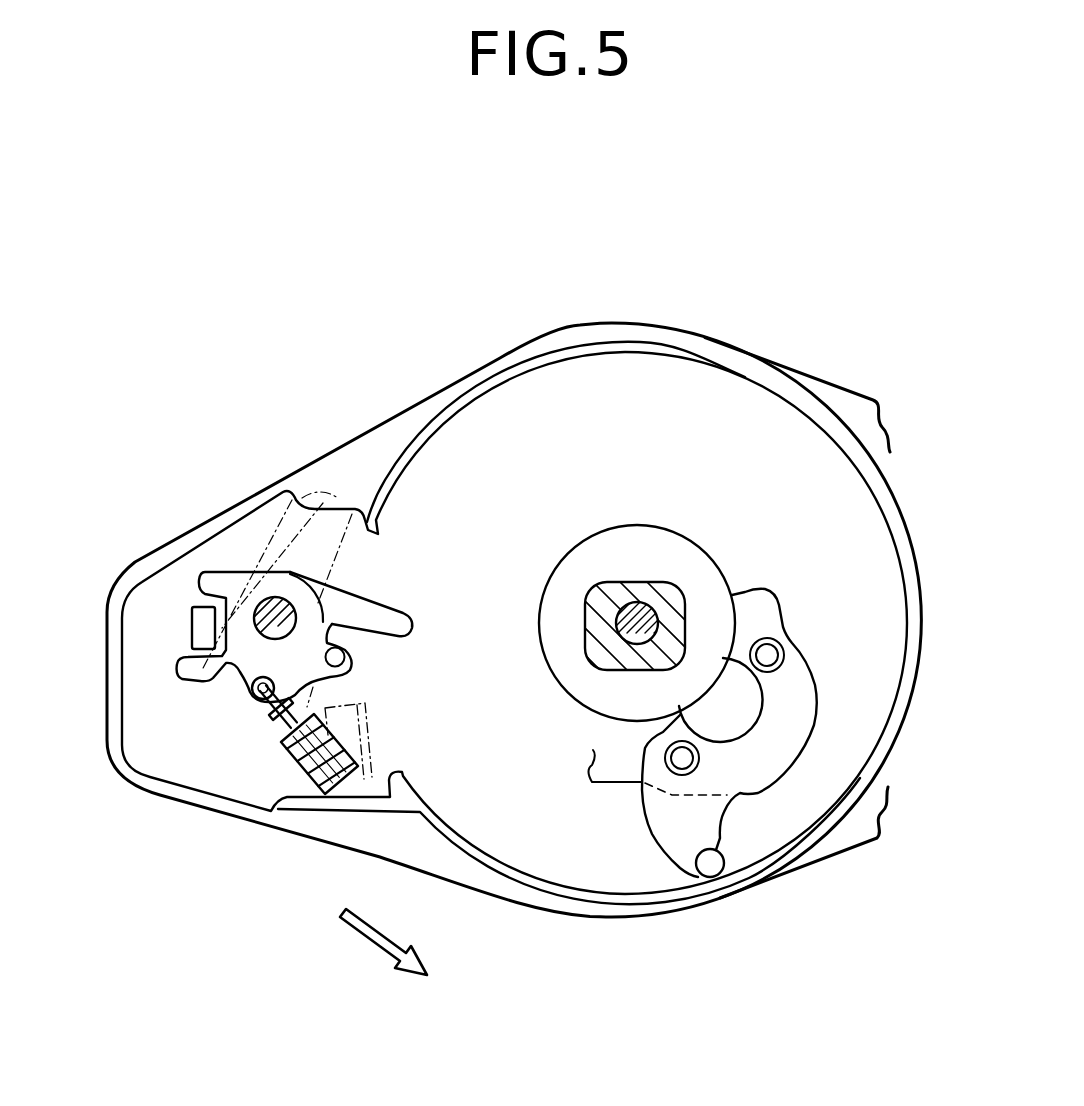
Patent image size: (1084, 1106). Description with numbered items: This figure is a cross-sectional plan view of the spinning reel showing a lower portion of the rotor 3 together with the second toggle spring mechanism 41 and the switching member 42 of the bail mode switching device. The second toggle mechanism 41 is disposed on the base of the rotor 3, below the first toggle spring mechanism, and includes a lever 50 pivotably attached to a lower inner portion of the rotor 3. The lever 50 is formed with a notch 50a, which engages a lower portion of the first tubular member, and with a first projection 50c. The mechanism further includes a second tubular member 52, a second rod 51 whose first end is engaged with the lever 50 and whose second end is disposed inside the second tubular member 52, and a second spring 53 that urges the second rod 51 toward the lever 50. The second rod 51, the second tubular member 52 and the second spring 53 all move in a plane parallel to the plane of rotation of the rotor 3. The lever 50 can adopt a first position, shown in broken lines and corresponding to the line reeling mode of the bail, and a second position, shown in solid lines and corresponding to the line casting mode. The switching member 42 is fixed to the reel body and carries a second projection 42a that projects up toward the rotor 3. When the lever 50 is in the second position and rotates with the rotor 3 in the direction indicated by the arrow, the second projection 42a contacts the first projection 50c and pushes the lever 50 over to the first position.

The rotor 3 is at (605, 330).
The second toggle spring mechanism 41 is at (233, 758).
The switching member 42 is at (723, 826).
The second projection 42a is at (677, 845).
The lever 50 is at (341, 559).
The notch 50a is at (203, 601).
The first projection 50c is at (408, 612).
The second rod 51 is at (297, 727).
The second tubular member 52 is at (373, 777).
The second spring 53 is at (300, 765).